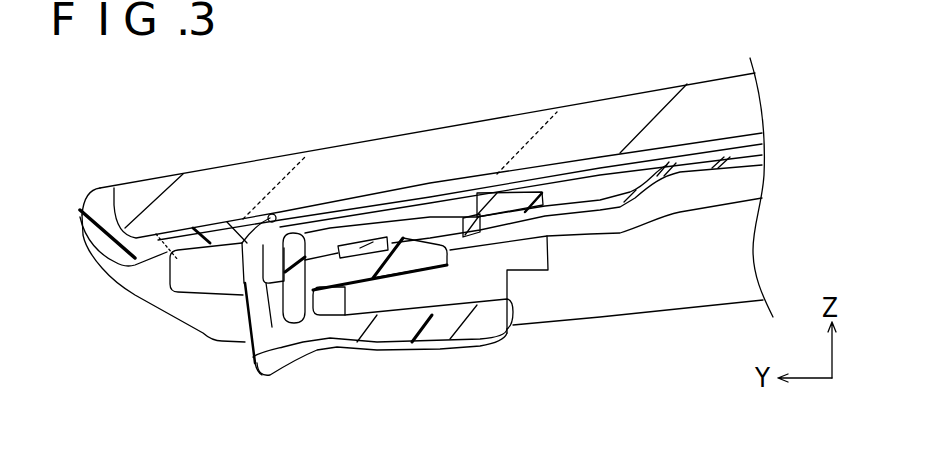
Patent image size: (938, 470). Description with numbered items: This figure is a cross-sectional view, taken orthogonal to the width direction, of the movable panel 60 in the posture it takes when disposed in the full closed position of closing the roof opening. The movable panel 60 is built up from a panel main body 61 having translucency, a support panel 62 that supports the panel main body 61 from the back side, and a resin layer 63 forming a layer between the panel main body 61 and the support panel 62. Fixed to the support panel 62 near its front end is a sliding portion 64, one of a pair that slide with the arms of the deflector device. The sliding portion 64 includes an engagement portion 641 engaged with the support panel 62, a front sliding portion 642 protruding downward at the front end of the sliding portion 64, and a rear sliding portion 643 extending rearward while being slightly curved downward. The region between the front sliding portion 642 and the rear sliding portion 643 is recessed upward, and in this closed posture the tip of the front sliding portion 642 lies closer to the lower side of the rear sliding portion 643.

The movable panel 60 is at (105, 116).
The panel main body 61 is at (521, 110).
The support panel 62 is at (748, 165).
The resin layer 63 is at (80, 210).
The sliding portion 64 is at (240, 311).
The engagement portion 641 is at (432, 238).
The front sliding portion 642 is at (266, 378).
The rear sliding portion 643 is at (477, 334).